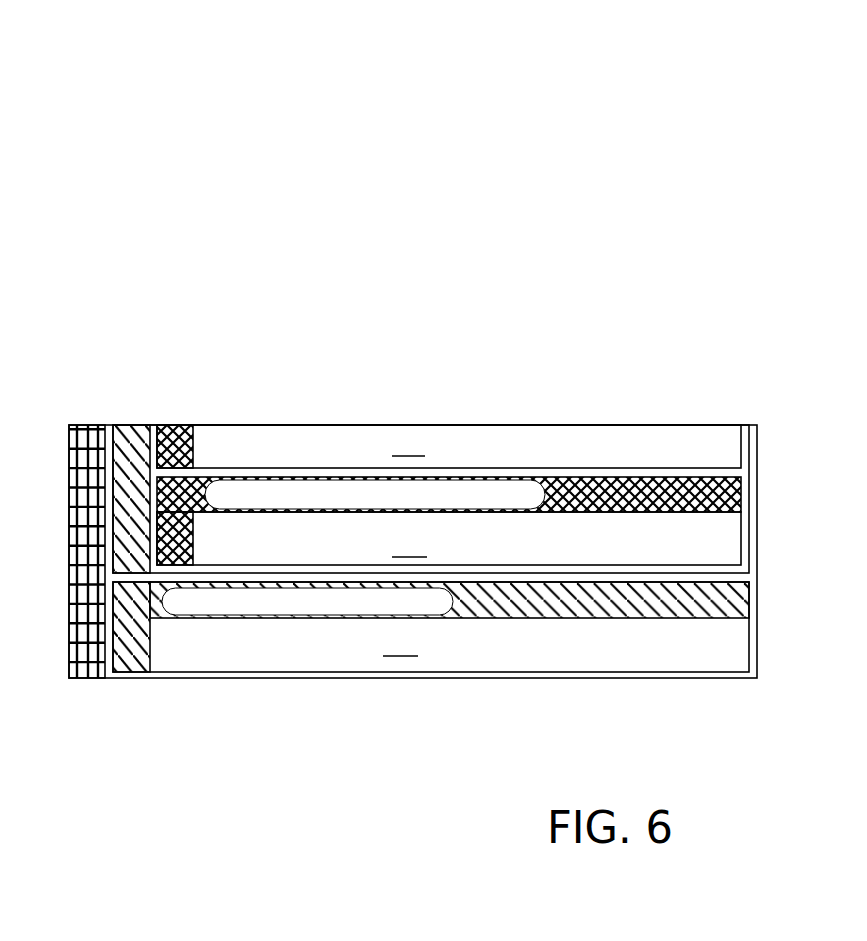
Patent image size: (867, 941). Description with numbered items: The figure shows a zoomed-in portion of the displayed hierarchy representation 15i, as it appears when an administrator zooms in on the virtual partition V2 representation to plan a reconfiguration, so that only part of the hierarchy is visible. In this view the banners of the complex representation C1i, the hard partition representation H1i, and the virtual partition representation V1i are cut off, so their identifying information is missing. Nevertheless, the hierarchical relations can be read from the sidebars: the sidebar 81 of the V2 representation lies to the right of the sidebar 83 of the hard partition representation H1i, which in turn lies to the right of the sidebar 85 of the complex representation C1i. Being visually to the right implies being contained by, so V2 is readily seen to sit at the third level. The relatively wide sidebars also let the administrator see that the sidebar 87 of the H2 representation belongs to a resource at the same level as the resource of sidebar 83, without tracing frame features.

The representation of hierarchy 15i is at (413, 415).
The representation of complex C1 C1i is at (105, 537).
The representation of hard partition H1 H1i is at (169, 551).
The representation of virtual partition V1 V1i is at (182, 424).
The sidebar of hard partition representation 83 is at (431, 439).
The sidebar of representation V2i 81 is at (193, 547).
The sidebar of representation C1i 85 is at (75, 680).
The sidebar of representation H2i 87 is at (128, 672).